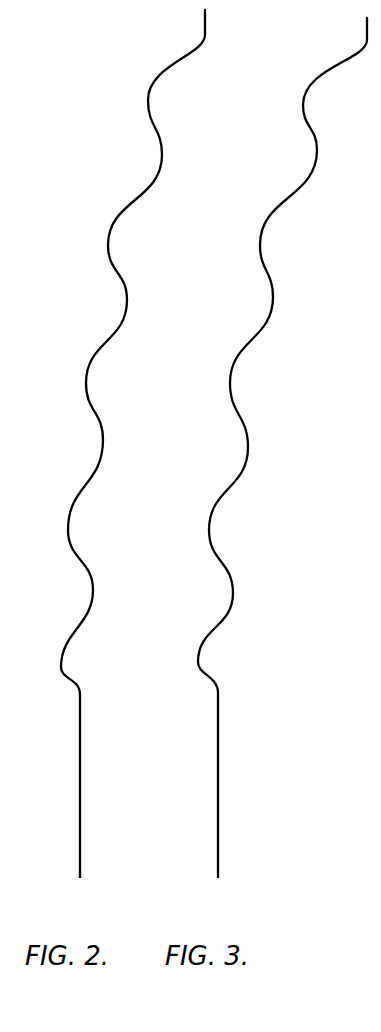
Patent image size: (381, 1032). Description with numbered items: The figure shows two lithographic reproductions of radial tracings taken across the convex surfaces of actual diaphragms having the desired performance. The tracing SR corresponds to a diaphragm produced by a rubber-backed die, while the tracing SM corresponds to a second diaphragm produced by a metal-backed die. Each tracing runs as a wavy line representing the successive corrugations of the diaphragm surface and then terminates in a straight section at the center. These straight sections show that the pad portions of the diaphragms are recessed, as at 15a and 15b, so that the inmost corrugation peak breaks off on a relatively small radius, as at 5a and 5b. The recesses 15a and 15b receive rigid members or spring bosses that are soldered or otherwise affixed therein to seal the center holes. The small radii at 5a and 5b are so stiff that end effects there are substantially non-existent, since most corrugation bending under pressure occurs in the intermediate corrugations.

In FIG. 2, the tracing SR is at (70, 315).
In FIG. 3, the tracing SM is at (227, 315).
In FIG. 2, the small radius 5a is at (62, 670).
In FIG. 3, the small radius 5b is at (198, 660).
In FIG. 2, the recess 15a is at (71, 832).
In FIG. 3, the recess 15b is at (209, 833).